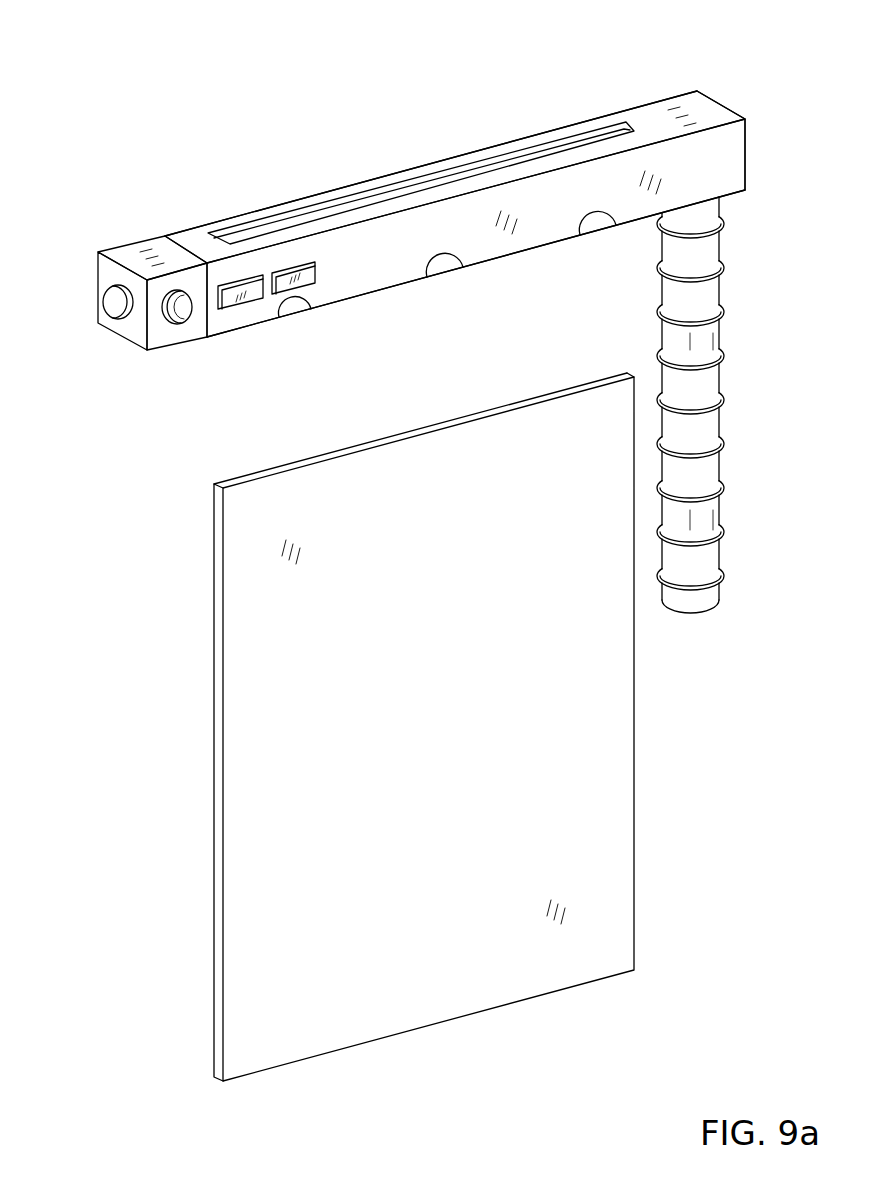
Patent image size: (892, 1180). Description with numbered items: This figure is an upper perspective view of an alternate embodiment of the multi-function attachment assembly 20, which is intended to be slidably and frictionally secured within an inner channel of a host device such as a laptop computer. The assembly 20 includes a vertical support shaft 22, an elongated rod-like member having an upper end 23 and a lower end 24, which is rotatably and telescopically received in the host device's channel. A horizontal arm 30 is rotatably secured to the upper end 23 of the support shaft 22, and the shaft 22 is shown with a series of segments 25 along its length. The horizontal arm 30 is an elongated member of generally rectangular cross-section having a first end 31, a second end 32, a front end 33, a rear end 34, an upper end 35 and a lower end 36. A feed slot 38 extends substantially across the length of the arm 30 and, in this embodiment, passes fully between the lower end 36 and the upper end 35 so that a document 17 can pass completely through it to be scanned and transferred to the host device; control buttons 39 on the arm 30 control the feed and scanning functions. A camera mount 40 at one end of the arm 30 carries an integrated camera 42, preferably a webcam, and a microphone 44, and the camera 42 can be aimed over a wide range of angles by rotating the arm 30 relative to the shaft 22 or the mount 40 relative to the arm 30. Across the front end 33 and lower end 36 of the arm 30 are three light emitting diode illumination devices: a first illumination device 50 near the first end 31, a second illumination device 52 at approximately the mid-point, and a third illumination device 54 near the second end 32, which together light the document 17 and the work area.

The document 17 is at (634, 750).
The multi-function attachment assembly 20 is at (313, 178).
The support shaft 22 is at (718, 418).
The upper end 23 is at (708, 208).
The lower end 24 is at (705, 612).
The arm segment 25 is at (727, 348).
The horizontal arm 30 is at (223, 216).
The first end 31 is at (733, 110).
The second end 32 is at (130, 330).
The front end 33 is at (702, 158).
The rear end 34 is at (645, 102).
The upper end 35 is at (533, 140).
The lower end 36 is at (537, 245).
The feed slot 38 is at (468, 175).
The control buttons 39 is at (233, 308).
The camera mount 40 is at (117, 252).
The camera 42 is at (175, 325).
The microphone 44 is at (105, 297).
The first illumination device 50 is at (294, 308).
The second illumination device 52 is at (443, 270).
The third illumination device 54 is at (597, 227).